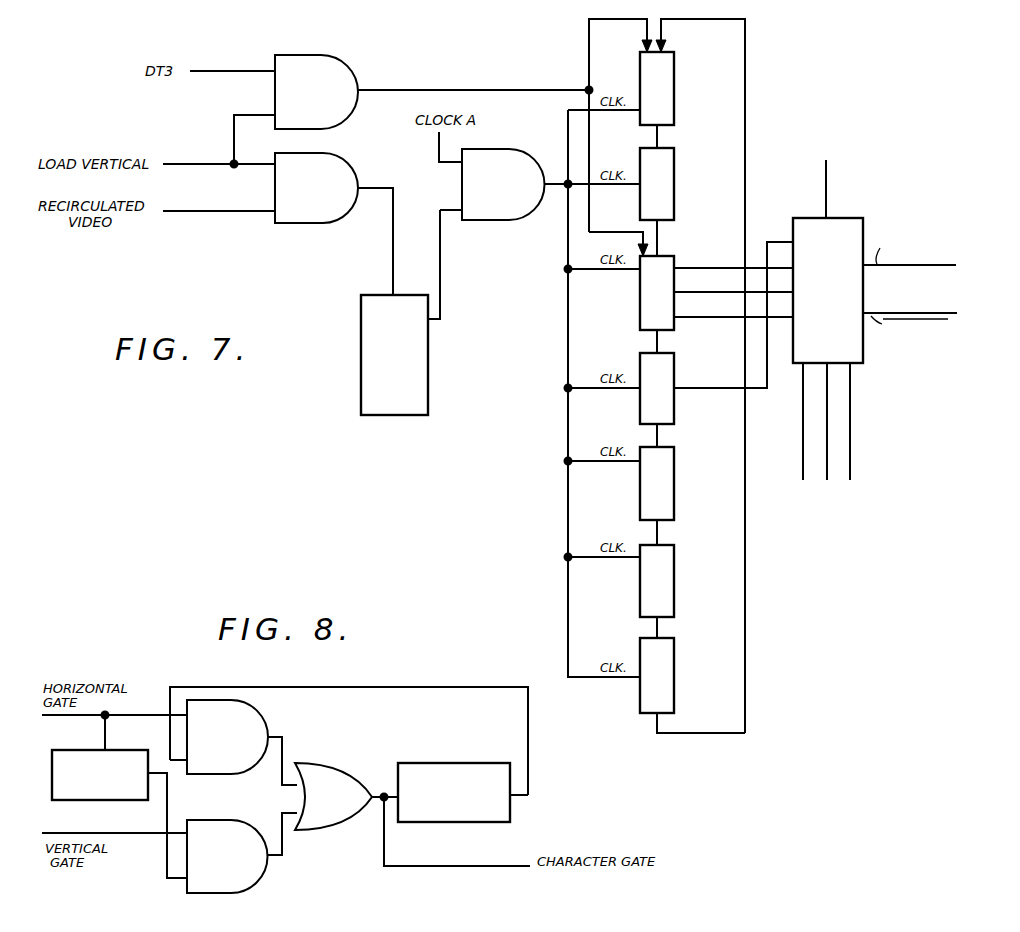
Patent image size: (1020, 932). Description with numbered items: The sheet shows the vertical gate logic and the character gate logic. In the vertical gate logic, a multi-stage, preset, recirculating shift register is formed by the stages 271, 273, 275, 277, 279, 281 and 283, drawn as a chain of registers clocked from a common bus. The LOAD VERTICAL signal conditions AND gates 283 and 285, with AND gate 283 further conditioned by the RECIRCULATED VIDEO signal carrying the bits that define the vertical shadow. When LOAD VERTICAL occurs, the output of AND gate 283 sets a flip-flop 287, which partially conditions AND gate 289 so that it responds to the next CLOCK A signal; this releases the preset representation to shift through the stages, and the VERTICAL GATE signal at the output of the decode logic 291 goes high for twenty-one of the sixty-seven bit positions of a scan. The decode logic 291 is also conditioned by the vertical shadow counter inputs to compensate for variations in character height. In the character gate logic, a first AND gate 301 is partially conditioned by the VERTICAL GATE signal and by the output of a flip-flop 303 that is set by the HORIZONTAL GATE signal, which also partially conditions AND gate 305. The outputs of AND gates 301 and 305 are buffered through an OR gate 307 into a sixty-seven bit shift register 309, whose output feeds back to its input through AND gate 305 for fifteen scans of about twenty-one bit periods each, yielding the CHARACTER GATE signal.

In FIG. 7, the shift register stage 271 is at (676, 97).
In FIG. 7, the shift register stage 273 is at (676, 178).
In FIG. 7, the shift register stage 275 is at (638, 280).
In FIG. 7, the shift register stage 277 is at (674, 410).
In FIG. 7, the shift register stage 279 is at (674, 492).
In FIG. 7, the shift register stage 281 is at (674, 584).
In FIG. 7, the AND gate 283 is at (323, 224).
In FIG. 7, the AND gate 285 is at (352, 72).
In FIG. 7, the flip-flop 287 is at (428, 390).
In FIG. 7, the AND gate 289 is at (517, 221).
In FIG. 7, the decode logic 291 is at (860, 364).
In FIG. 8, the first AND gate 301 is at (245, 893).
In FIG. 8, the flip-flop 303 is at (158, 738).
In FIG. 8, the AND gate 305 is at (262, 720).
In FIG. 8, the OR gate 307 is at (313, 830).
In FIG. 8, the 67 bit shift register 309 is at (475, 763).